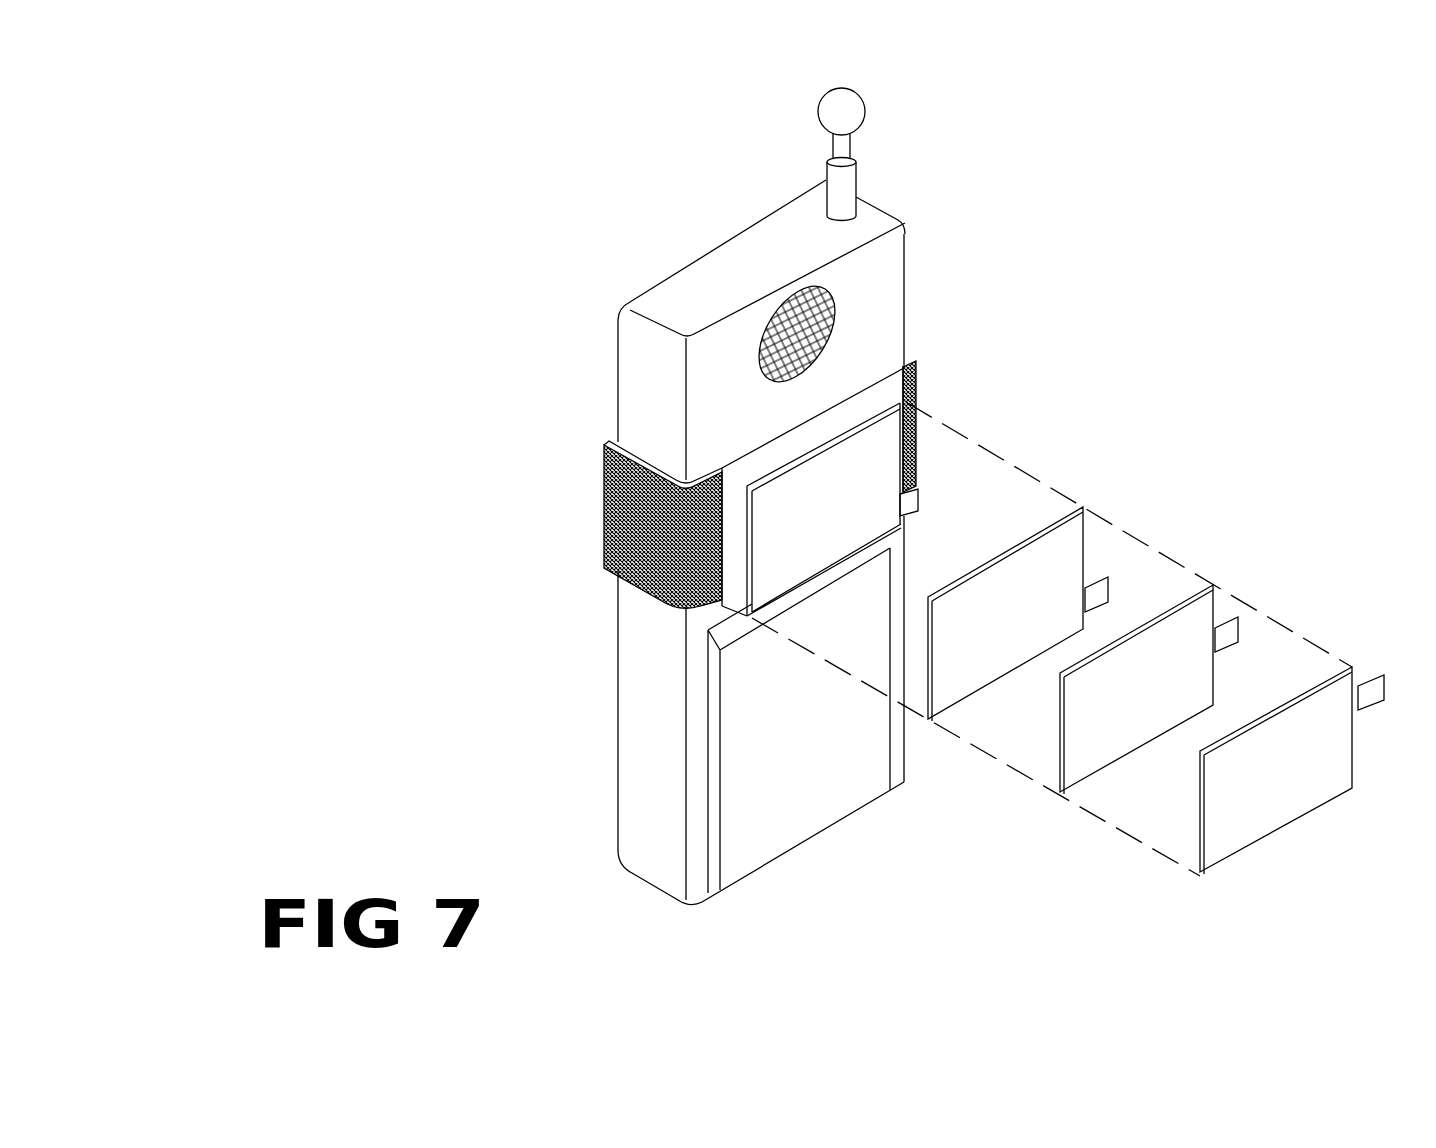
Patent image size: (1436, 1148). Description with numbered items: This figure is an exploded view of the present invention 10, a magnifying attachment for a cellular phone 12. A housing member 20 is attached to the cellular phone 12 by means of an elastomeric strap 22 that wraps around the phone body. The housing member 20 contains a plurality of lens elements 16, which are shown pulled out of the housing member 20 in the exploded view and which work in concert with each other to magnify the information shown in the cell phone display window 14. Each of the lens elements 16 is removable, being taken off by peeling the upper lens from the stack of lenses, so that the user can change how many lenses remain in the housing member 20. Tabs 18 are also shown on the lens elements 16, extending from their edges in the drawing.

The present invention 10 is at (1062, 360).
The cellular phone 12 is at (698, 278).
The cell phone display window 14 is at (722, 468).
The lens elements 16 is at (1197, 823).
The tabs 18 is at (918, 500).
The housing member 20 is at (870, 412).
The elastomeric strap 22 is at (622, 447).